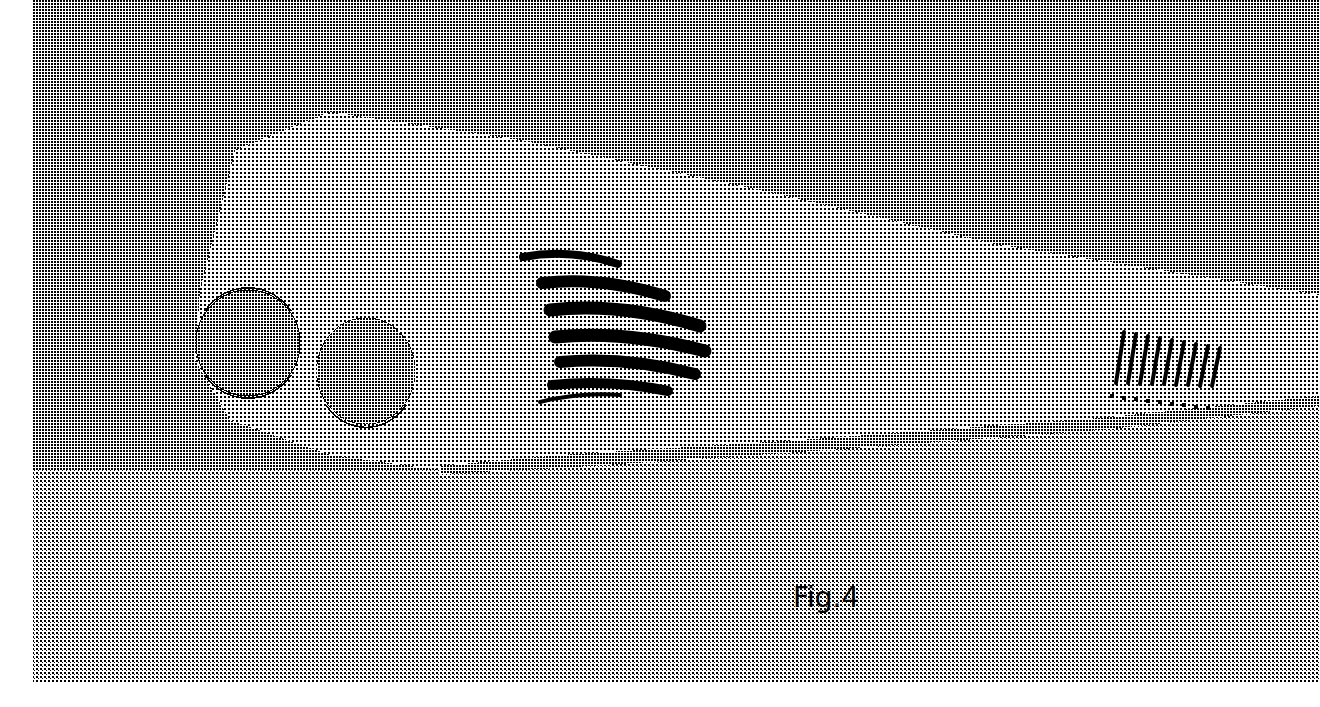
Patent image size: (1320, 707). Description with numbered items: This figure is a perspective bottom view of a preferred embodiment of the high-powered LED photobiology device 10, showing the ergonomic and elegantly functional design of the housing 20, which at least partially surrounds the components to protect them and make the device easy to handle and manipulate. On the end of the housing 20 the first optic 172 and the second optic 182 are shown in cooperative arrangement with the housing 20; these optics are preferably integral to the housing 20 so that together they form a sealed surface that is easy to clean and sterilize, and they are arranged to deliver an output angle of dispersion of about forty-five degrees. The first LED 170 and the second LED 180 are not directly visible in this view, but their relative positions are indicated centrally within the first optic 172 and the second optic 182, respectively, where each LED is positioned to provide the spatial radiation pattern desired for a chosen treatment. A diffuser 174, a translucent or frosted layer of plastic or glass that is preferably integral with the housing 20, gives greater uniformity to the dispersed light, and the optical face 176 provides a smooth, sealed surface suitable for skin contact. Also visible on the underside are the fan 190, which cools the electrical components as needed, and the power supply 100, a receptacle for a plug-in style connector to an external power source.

The high-powered LED photobiology device 10 is at (836, 160).
The housing 20 is at (270, 122).
The power supply 100 is at (1265, 410).
The first LED 170 is at (245, 357).
The first optic 172 is at (262, 397).
The diffuser 174 is at (337, 337).
The optical face 176 is at (262, 293).
The second LED 180 is at (363, 378).
The second optic 182 is at (393, 422).
The fan 190 is at (587, 387).